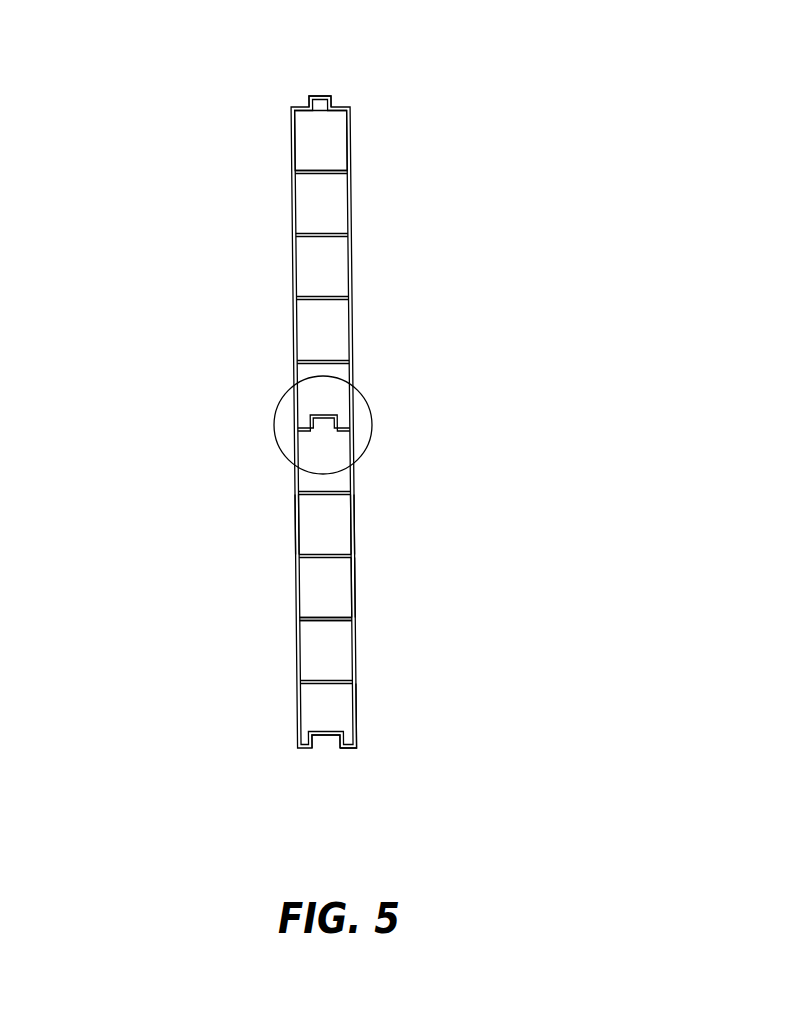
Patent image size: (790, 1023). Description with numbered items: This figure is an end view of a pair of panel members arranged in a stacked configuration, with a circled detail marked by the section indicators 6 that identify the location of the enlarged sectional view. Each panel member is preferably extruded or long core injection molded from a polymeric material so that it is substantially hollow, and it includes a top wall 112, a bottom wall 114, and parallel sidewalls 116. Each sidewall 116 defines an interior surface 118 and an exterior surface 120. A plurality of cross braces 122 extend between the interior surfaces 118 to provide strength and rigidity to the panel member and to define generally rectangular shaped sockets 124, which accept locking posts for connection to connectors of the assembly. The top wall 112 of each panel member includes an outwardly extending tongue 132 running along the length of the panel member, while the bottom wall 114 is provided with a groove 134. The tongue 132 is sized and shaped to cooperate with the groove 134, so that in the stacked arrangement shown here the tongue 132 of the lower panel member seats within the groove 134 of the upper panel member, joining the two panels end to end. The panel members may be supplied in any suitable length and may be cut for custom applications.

The top wall 112 is at (291, 107).
The tongue 132 is at (322, 96).
The sockets 124 is at (323, 147).
The interior surface 118 is at (352, 522).
The sidewalls 116 is at (295, 543).
The exterior surface 120 is at (355, 594).
The cross braces 122 is at (320, 622).
The groove 134 is at (325, 737).
The bottom wall 114 is at (352, 748).
The section 6-6 detail circle 6 is at (269, 425).